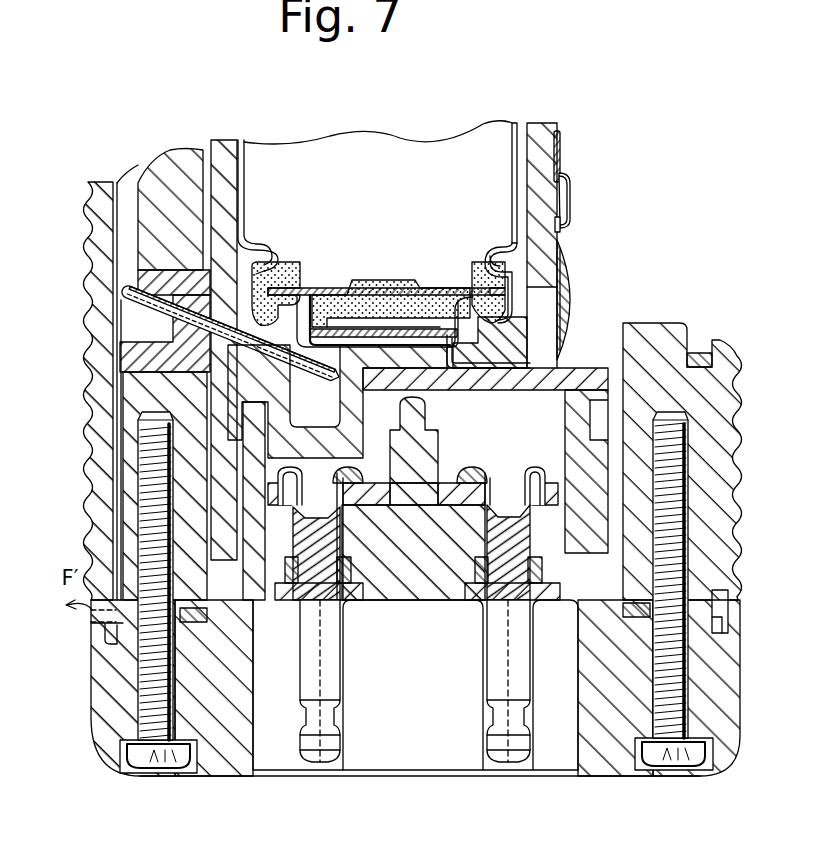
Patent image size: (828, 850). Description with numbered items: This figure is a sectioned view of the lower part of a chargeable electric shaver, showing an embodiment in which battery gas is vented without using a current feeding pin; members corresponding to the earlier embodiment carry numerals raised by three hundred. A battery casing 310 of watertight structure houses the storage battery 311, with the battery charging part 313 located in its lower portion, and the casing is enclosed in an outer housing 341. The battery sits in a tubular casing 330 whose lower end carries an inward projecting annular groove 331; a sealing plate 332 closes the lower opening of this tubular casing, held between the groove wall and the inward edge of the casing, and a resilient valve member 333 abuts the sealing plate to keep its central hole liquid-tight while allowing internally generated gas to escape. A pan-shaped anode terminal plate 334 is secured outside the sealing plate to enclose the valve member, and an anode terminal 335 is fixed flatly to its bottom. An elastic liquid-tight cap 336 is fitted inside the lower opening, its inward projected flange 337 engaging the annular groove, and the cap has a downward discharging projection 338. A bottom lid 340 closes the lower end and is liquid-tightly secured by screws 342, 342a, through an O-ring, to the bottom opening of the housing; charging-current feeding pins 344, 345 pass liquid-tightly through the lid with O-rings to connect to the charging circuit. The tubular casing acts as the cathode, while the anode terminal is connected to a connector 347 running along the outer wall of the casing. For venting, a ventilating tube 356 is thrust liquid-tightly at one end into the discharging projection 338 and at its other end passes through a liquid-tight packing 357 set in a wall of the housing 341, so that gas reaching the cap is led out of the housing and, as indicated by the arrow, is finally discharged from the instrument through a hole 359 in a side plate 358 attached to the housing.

The battery casing 310 is at (542, 140).
The storage battery 311 is at (405, 142).
The battery charging part 313 is at (582, 368).
The tubular casing 330 is at (517, 200).
The annular groove 331 is at (493, 250).
The sealing plate 332 is at (530, 284).
The resilient valve member 333 is at (313, 303).
The anode terminal plate 334 is at (350, 337).
The anode terminal 335 is at (387, 337).
The liquid-tight cap 336 is at (512, 340).
The inward projected flange 337 is at (560, 226).
The discharging projection 338 is at (287, 386).
The bottom lid 340 is at (593, 733).
The outer housing 341 is at (660, 345).
The screw 342 is at (153, 697).
The screw 342a is at (663, 715).
The charging-current feeding pin 344 is at (343, 655).
The charging-current feeding pin 345 is at (492, 668).
The connector 347 is at (559, 148).
The ventilating tube 356 is at (140, 318).
The liquid-tight packing 357 is at (138, 357).
The side plate 358 is at (103, 436).
The hole 359 is at (93, 623).